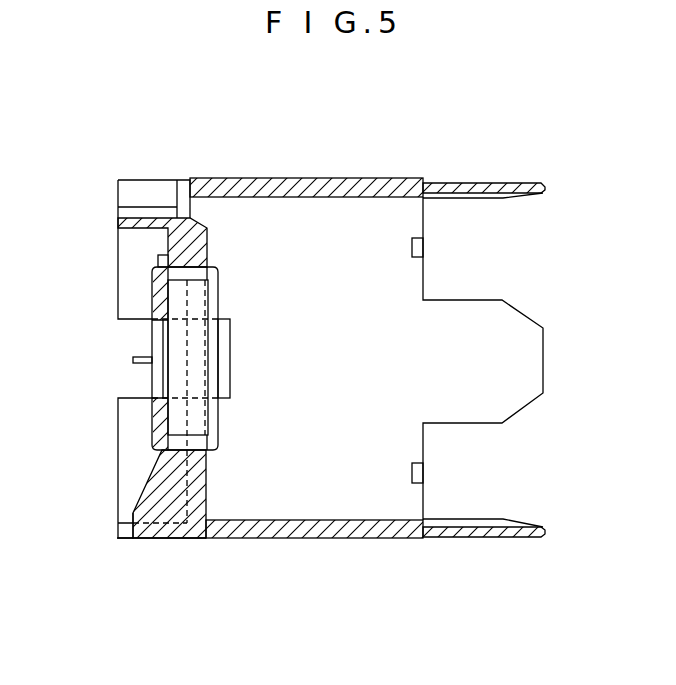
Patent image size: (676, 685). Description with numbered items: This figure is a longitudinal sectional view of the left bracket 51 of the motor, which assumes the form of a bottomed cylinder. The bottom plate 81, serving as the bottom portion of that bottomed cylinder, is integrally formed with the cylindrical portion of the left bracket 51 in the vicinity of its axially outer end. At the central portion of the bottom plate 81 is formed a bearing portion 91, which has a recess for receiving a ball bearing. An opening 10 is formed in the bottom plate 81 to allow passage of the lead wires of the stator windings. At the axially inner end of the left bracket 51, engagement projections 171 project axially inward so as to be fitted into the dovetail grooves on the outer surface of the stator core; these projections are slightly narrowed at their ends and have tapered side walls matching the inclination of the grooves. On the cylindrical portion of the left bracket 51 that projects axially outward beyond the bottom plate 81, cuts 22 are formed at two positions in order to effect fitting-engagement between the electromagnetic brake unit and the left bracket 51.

The opening 10 is at (195, 207).
The left bracket 51 is at (336, 162).
The engagement projection 171 is at (482, 181).
The bottom plate 81 is at (207, 242).
The bearing portion 91 is at (152, 288).
The cut 22 is at (138, 400).